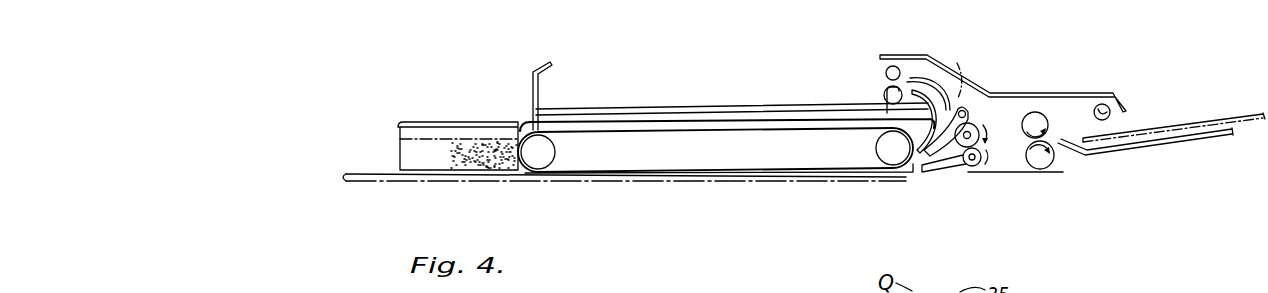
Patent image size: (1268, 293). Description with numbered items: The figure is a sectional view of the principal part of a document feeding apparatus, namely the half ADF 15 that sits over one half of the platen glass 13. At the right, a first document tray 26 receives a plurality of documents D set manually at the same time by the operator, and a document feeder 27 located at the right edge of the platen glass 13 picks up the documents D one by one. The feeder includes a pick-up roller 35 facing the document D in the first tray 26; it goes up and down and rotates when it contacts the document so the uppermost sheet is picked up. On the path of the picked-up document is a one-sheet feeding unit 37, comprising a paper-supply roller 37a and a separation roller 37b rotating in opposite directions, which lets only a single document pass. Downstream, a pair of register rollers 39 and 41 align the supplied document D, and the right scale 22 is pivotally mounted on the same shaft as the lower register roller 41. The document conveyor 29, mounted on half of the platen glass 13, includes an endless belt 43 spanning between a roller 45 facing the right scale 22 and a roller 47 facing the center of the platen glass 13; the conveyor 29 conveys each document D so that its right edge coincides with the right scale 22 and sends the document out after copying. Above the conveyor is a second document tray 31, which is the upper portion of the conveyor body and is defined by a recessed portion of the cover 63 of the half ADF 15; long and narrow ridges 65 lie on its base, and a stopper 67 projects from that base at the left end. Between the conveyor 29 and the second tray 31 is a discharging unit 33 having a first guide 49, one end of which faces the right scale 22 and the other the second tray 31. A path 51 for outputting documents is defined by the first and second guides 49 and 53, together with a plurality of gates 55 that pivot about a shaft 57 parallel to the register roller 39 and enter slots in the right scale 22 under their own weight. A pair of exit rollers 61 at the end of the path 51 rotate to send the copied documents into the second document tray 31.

The platen glass 13 is at (372, 181).
The half ADF 15 is at (726, 118).
The right scale 22 is at (954, 160).
The first document tray 26 is at (1193, 140).
The document feeder 27 is at (1015, 172).
The document conveyor 29 is at (622, 144).
The second document tray 31 is at (565, 93).
The discharging unit 33 is at (877, 81).
The pick-up roller 35 is at (1108, 105).
The one-sheet feeding unit 37 is at (1057, 119).
The paper-supply roller 37a is at (1036, 112).
The separation roller 37b is at (1055, 163).
The register roller 39 is at (980, 110).
The register roller 41 is at (985, 166).
The endless belt 43 is at (722, 170).
The roller 45 is at (893, 155).
The roller 47 is at (545, 157).
The first guide 49 is at (921, 70).
The path 51 is at (957, 63).
The second guide 53 is at (935, 70).
The gates 55 is at (958, 163).
The shaft 57 is at (968, 110).
The exit rollers 61 is at (891, 66).
The cover 63 is at (1088, 93).
The ridges 65 is at (780, 104).
The stopper 67 is at (539, 66).
The document D is at (1193, 122).